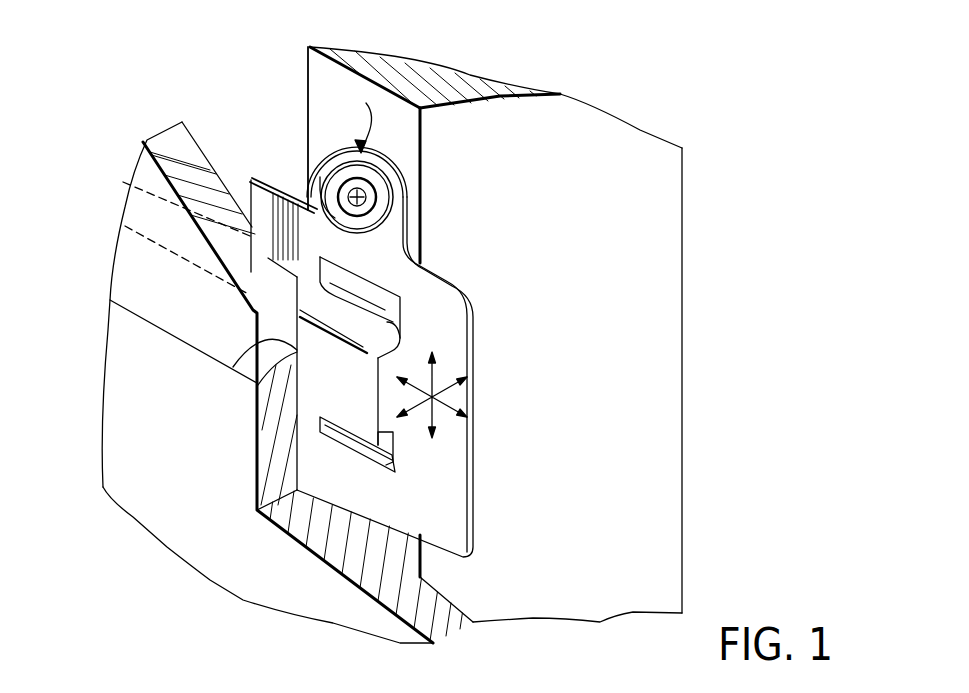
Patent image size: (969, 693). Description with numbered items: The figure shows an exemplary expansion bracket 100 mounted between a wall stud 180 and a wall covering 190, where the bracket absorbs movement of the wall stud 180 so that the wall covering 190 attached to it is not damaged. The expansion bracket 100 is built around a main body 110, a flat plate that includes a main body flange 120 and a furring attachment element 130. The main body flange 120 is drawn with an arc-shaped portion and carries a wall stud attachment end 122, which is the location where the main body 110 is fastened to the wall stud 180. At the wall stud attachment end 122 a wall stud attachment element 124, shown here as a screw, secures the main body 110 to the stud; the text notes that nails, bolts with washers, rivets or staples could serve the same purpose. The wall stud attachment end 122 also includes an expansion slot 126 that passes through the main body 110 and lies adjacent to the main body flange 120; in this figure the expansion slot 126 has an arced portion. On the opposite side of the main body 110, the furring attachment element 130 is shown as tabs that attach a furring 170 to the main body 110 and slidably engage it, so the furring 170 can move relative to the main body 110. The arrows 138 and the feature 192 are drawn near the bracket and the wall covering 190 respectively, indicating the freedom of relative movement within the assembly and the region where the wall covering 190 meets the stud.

The expansion bracket 100 is at (737, 194).
The main body 110 is at (270, 178).
The main body flange 120 is at (308, 147).
The wall stud attachment end 122 is at (348, 124).
The wall stud attachment element 124 is at (378, 193).
The expansion slot 126 is at (388, 224).
The furring attachment element 130 is at (395, 305).
The adjustment directions 138 is at (452, 404).
The furring 170 is at (352, 396).
The wall stud 180 is at (621, 326).
The wall covering 190 is at (130, 475).
The channel 192 is at (243, 363).